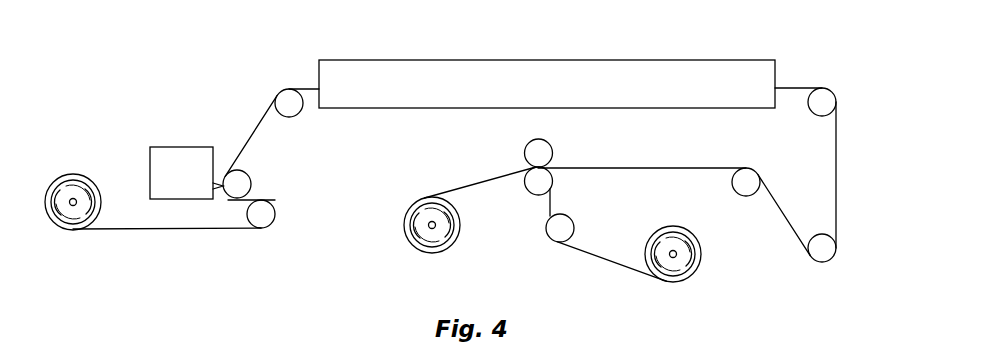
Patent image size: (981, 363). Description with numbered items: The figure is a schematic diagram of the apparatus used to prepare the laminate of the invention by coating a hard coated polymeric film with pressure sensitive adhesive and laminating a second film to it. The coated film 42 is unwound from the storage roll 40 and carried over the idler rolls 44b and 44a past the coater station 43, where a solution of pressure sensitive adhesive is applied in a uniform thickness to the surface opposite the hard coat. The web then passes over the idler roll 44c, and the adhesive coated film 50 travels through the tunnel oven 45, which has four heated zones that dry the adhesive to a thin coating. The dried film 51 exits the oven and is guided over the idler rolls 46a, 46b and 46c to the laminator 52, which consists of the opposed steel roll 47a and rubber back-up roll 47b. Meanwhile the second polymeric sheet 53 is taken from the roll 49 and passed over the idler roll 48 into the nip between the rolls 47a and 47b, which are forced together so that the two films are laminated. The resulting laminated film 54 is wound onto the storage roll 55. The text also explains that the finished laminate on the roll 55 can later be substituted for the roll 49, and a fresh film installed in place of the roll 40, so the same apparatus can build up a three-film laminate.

The storage roll 40 is at (83, 181).
The coated film 42 is at (122, 227).
The coater station 43 is at (173, 155).
The idler roll 44a is at (243, 182).
The idler roll 44b is at (266, 218).
The idler roll 44c is at (285, 98).
The tunnel oven 45 is at (493, 65).
The idler roll 46a is at (828, 98).
The idler roll 46b is at (828, 250).
The idler roll 46c is at (745, 187).
The steel roll 47a is at (545, 150).
The rubber back-up roll 47b is at (533, 187).
The idler roll 48 is at (573, 228).
The roll 49 is at (687, 277).
The adhesive coated film 50 is at (304, 88).
The dried film 51 is at (801, 86).
The laminator 52 is at (556, 174).
The second polymeric sheet 53 is at (598, 263).
The laminated film 54 is at (485, 180).
The storage roll 55 is at (420, 246).